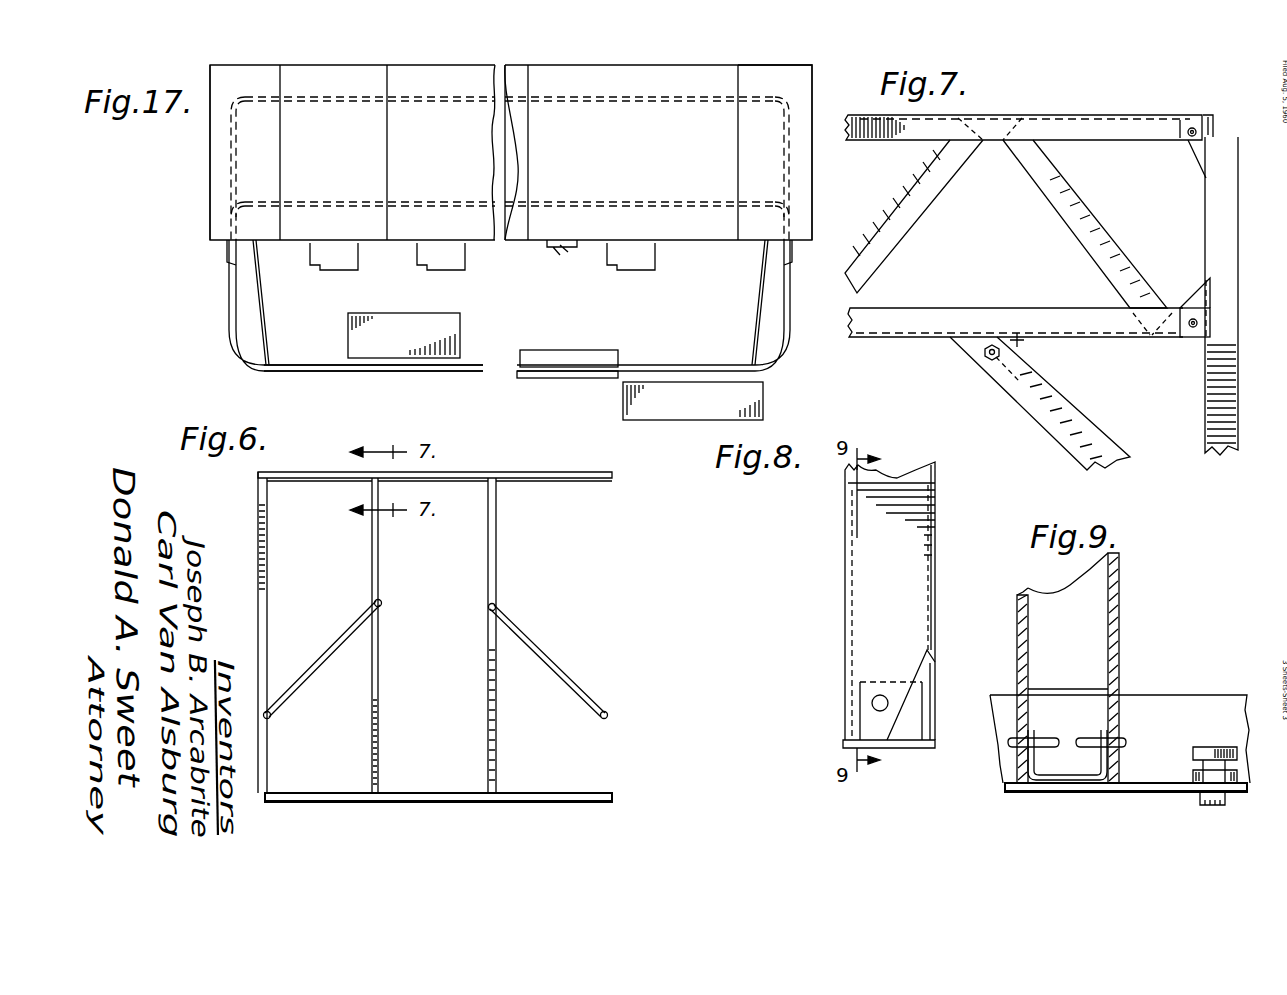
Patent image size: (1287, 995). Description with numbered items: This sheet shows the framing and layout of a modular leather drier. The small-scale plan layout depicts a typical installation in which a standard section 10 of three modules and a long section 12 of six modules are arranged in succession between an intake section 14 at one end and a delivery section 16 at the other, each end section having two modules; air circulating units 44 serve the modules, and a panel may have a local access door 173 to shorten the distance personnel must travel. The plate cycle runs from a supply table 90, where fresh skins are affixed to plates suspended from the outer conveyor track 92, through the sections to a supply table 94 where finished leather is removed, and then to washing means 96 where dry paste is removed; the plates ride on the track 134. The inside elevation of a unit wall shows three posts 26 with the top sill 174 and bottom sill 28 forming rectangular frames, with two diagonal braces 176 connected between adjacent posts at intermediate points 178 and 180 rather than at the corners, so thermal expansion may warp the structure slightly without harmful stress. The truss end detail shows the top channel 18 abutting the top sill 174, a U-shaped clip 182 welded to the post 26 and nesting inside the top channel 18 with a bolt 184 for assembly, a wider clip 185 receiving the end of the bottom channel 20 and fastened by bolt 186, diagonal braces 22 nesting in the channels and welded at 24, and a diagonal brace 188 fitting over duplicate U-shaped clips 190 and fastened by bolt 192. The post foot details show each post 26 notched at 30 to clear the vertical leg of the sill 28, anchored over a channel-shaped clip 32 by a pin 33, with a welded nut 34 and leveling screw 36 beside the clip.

In FIG. 17, the standard section 10 is at (374, 222).
In FIG. 17, the long section 12 is at (521, 228).
In FIG. 17, the intake section 14 is at (218, 143).
In FIG. 17, the delivery section 16 is at (765, 83).
In FIG. 7, the top channel 18 is at (1098, 125).
In FIG. 7, the bottom channel 20 is at (885, 315).
In FIG. 7, the diagonal brace 22 is at (952, 165).
In FIG. 7, the weld 24 is at (1152, 300).
In FIG. 7, the post 26 is at (1215, 380).
In FIG. 6, the post 26 is at (268, 590).
In FIG. 6, the bottom sill 28 is at (428, 795).
In FIG. 8, the bottom sill 28 is at (930, 750).
In FIG. 9, the bottom sill 28 is at (1120, 743).
In FIG. 8, the notch 30 is at (930, 655).
In FIG. 9, the notch 30 is at (1085, 695).
In FIG. 8, the channel-shaped clip 32 is at (915, 710).
In FIG. 9, the channel-shaped clip 32 is at (1086, 777).
In FIG. 8, the pin 33 is at (872, 703).
In FIG. 9, the pin 33 is at (1048, 740).
In FIG. 9, the nut 34 is at (1192, 775).
In FIG. 9, the leveling screw 36 is at (1192, 748).
In FIG. 17, the air circulating unit 44 is at (330, 262).
In FIG. 17, the supply table 90 is at (382, 322).
In FIG. 17, the outer conveyor track 92 is at (452, 373).
In FIG. 17, the supply table 94 is at (757, 402).
In FIG. 17, the washing means 96 is at (534, 358).
In FIG. 17, the track 134 is at (220, 293).
In FIG. 17, the local access door 173 is at (553, 244).
In FIG. 7, the top sill 174 is at (1218, 135).
In FIG. 6, the top sill 174 is at (448, 475).
In FIG. 6, the diagonal brace 176 is at (328, 652).
In FIG. 6, the intermediate connection point 178 is at (272, 718).
In FIG. 6, the intermediate connection point 180 is at (383, 605).
In FIG. 7, the U-shaped clip 182 is at (1198, 150).
In FIG. 7, the bolt 184 is at (1190, 125).
In FIG. 7, the wider clip 185 is at (1196, 290).
In FIG. 7, the bolt 186 is at (1193, 330).
In FIG. 7, the diagonal brace 188 is at (1080, 412).
In FIG. 7, the U-shaped clip 190 is at (1043, 348).
In FIG. 7, the bolt 192 is at (988, 358).